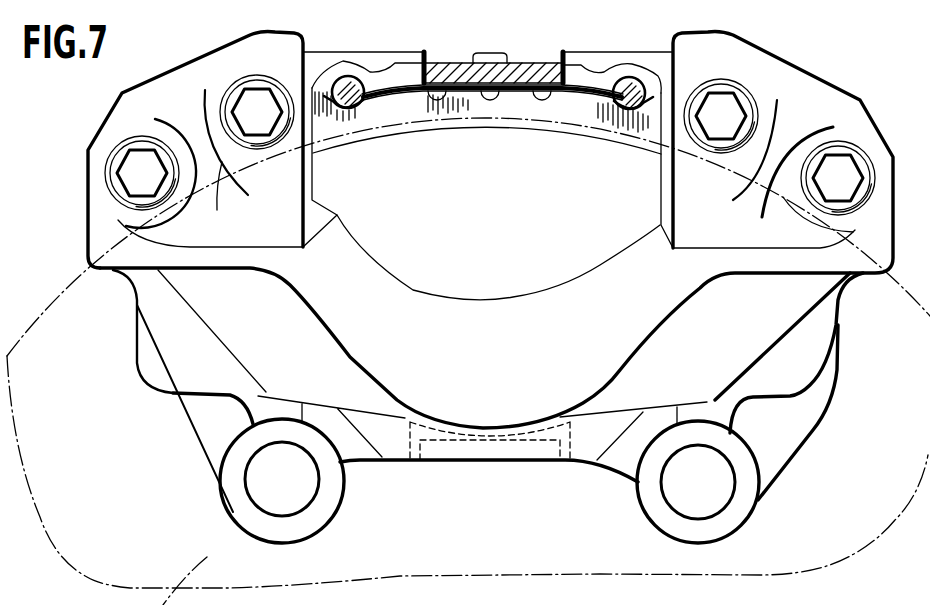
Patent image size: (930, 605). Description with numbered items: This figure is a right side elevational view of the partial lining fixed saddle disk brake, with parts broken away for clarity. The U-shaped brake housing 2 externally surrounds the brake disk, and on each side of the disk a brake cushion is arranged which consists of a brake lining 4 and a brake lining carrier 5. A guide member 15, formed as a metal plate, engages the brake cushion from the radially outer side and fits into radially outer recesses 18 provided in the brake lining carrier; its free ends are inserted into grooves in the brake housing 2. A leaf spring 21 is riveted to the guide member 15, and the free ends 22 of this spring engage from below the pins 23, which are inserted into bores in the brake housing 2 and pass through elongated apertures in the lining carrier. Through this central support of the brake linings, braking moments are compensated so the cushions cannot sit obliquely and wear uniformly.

The brake housing 2 is at (880, 222).
The brake lining 4 is at (508, 268).
The brake lining carrier 5 is at (407, 108).
The guide member 15 is at (442, 84).
The radially outer recess 18 is at (468, 361).
The leaf spring 21 is at (516, 88).
The free end 22 is at (337, 103).
The pin 23 is at (334, 77).